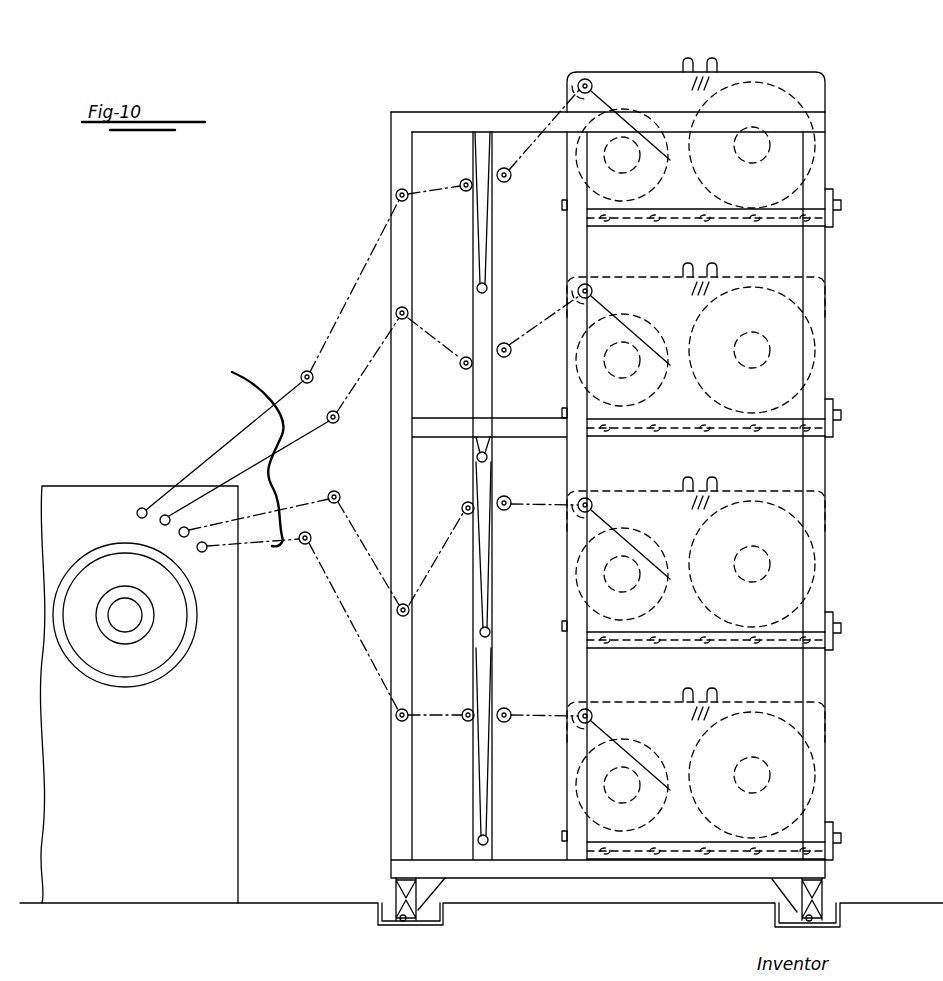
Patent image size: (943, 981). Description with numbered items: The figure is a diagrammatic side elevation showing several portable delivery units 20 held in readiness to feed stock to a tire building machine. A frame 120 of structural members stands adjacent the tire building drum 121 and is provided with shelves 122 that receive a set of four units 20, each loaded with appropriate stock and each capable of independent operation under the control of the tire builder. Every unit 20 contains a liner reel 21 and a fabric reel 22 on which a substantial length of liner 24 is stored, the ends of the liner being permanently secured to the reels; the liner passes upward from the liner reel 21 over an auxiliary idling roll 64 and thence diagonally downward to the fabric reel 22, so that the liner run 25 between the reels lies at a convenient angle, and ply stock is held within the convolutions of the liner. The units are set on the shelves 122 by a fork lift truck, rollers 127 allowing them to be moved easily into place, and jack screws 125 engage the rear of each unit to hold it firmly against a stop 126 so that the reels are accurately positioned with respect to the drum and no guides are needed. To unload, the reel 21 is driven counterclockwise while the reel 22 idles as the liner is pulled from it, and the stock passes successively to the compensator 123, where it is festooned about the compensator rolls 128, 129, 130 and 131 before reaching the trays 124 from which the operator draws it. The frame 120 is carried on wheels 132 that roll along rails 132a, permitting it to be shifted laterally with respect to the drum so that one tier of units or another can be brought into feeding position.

The portable unit 20 is at (708, 55).
The liner reel 21 is at (651, 112).
The fabric reel 22 is at (741, 80).
The liner 24 is at (578, 745).
The tape run 25 is at (556, 98).
The auxiliary idling roll 64 is at (596, 96).
The frame 120 is at (386, 763).
The tire building drum 121 is at (198, 615).
The shelves 122 is at (630, 226).
The compensator 123 is at (493, 100).
The trays 124 is at (246, 380).
The jack screws 125 is at (827, 192).
The stop 126 is at (561, 205).
The rollers 127 is at (745, 226).
The compensator roll 128 is at (510, 180).
The compensator roll 129 is at (477, 288).
The compensator roll 130 is at (466, 178).
The compensator roll 131 is at (396, 195).
The wheels 132 is at (396, 905).
The rails 132a is at (403, 921).